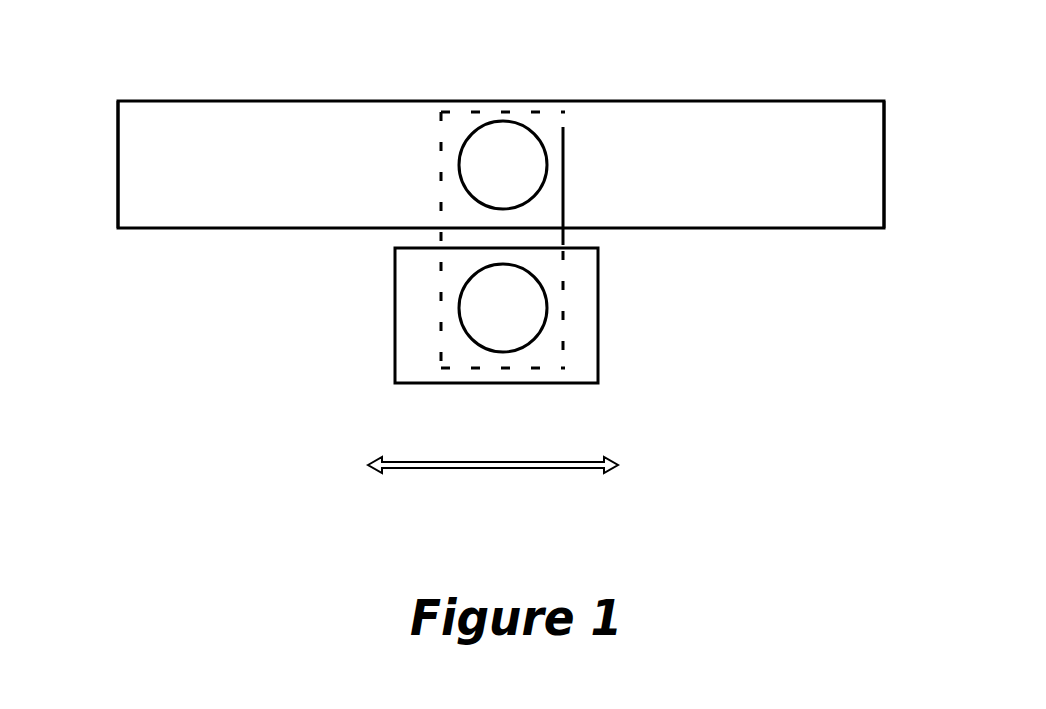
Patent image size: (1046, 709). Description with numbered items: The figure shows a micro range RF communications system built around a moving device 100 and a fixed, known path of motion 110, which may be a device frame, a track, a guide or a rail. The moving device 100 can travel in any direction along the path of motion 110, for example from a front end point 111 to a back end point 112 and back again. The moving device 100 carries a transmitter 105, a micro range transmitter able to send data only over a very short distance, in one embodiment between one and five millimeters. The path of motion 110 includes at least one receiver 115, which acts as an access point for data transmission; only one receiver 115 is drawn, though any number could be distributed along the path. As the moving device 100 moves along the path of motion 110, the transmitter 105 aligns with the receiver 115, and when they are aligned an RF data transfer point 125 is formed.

The moving device 100 is at (572, 383).
The transmitter 105 is at (527, 303).
The path of motion 110 is at (740, 100).
The front end point 111 is at (118, 140).
The back end point 112 is at (886, 198).
The receiver 115 is at (520, 155).
The RF data transfer point 125 is at (468, 110).